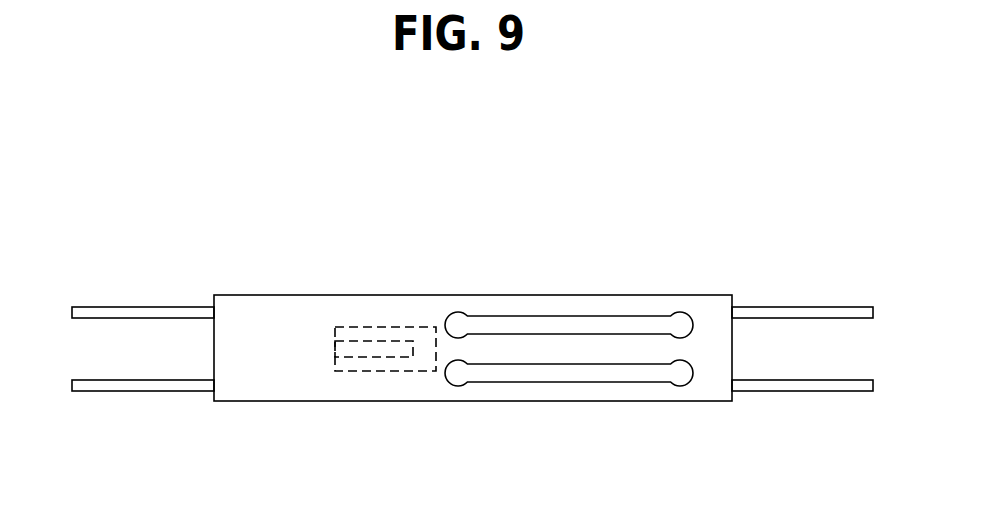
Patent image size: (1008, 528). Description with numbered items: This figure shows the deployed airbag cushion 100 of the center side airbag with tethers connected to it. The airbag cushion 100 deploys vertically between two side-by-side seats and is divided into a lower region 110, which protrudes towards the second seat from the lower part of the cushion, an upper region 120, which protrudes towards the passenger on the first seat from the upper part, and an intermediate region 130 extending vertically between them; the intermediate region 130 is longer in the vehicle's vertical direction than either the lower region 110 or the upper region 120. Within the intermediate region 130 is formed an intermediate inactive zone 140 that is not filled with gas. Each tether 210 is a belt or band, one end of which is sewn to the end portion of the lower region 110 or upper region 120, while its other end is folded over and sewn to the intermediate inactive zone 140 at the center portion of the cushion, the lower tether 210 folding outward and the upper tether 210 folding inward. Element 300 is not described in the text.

The airbag cushion 100 is at (278, 295).
The lower region 110 is at (295, 368).
The upper region 120 is at (708, 320).
The intermediate region 130 is at (495, 393).
The intermediate inactive zone 140 is at (560, 377).
The tether 210 is at (145, 387).
The strain gauge 300 is at (398, 348).